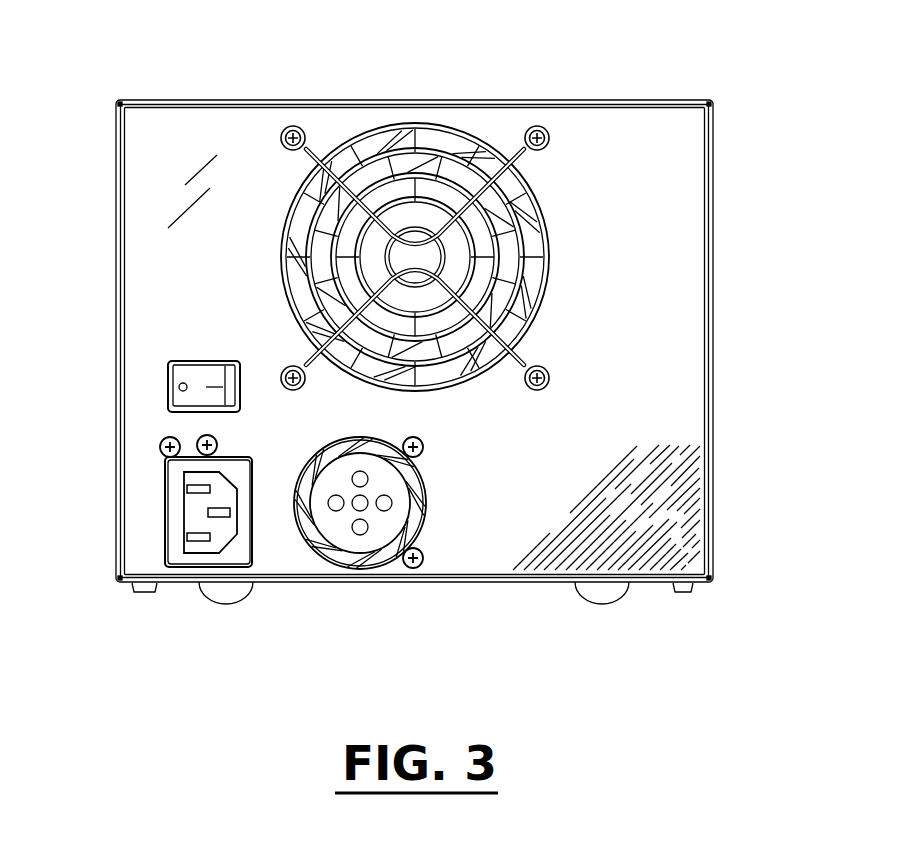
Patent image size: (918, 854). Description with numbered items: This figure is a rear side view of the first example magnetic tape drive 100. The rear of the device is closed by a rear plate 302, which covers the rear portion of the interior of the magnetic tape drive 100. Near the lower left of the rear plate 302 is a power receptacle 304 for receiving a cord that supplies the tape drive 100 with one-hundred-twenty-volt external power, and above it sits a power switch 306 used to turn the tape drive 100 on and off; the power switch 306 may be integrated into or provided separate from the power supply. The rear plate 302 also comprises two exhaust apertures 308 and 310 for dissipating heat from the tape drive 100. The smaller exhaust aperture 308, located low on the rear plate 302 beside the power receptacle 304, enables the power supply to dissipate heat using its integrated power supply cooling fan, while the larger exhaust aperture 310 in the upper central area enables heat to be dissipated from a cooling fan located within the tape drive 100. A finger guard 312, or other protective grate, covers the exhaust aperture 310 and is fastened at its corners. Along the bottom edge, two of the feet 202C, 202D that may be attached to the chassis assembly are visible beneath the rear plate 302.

The magnetic tape drive 100 is at (221, 52).
The rear plate 302 is at (650, 283).
The power receptacle 304 is at (182, 487).
The power switch 306 is at (168, 376).
The exhaust aperture 308 is at (436, 500).
The exhaust aperture 310 is at (552, 198).
The finger guard 312 is at (311, 146).
The foot 202C is at (236, 604).
The foot 202D is at (608, 604).